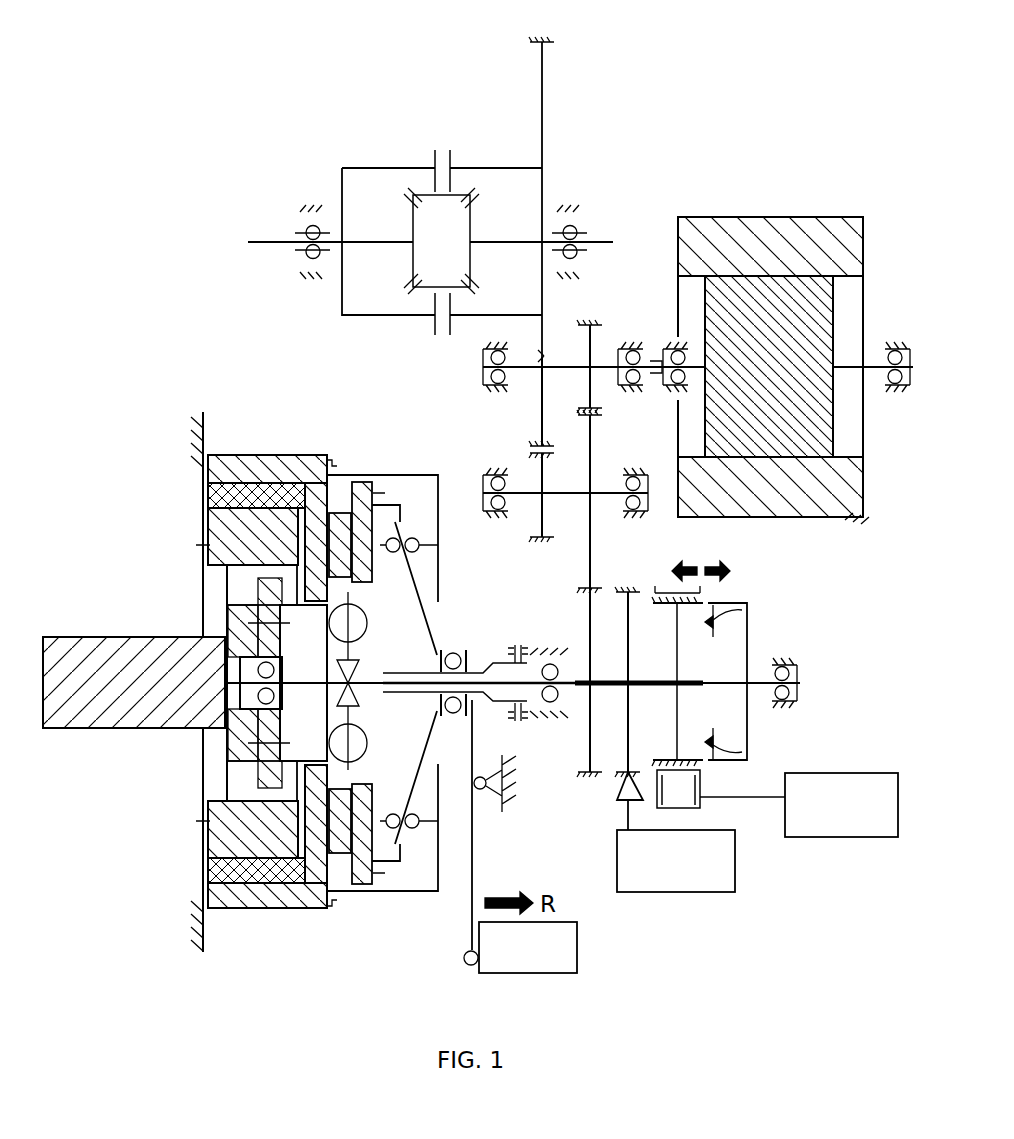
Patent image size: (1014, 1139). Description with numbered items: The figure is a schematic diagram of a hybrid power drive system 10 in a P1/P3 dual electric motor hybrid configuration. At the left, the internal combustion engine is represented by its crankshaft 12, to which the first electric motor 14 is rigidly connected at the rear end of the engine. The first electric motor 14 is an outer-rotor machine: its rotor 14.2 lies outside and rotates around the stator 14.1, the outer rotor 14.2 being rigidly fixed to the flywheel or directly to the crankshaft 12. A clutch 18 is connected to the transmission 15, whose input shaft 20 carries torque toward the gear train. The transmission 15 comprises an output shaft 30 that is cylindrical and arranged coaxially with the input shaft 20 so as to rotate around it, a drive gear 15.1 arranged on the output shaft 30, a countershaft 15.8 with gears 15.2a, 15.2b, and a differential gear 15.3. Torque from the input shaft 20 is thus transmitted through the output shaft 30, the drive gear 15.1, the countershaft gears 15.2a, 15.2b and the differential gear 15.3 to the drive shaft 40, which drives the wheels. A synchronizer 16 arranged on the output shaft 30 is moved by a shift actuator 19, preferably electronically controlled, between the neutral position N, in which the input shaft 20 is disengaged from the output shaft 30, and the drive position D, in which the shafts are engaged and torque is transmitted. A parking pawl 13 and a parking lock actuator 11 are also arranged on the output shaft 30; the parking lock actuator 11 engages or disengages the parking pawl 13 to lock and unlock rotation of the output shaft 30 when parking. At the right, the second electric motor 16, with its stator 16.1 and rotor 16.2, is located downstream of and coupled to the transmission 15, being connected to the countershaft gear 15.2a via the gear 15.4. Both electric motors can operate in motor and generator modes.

The hybrid power drive system 10 is at (190, 368).
The parking lock actuator 11 is at (707, 895).
The crankshaft 12 is at (70, 635).
The parking pawl 13 is at (622, 797).
The first electric motor 14 is at (244, 626).
The stator 14.1 is at (207, 540).
The rotor 14.2 is at (312, 458).
The transmission 15 is at (654, 633).
The drive gear 15.1 is at (587, 758).
The countershaft gear 15.2a is at (592, 555).
The countershaft gear 15.2b is at (540, 520).
The differential gear 15.3 is at (540, 420).
The gear 15.4 is at (590, 335).
The countershaft 15.8 is at (608, 468).
The second electric motor 16 is at (818, 311).
The stator 16.1 is at (840, 256).
The rotor 16.2 is at (818, 418).
The clutch 18 is at (400, 455).
The shift actuator 19 is at (880, 772).
The input shaft 20 is at (752, 680).
The output shaft 30 is at (668, 688).
The drive shaft 40 is at (385, 240).